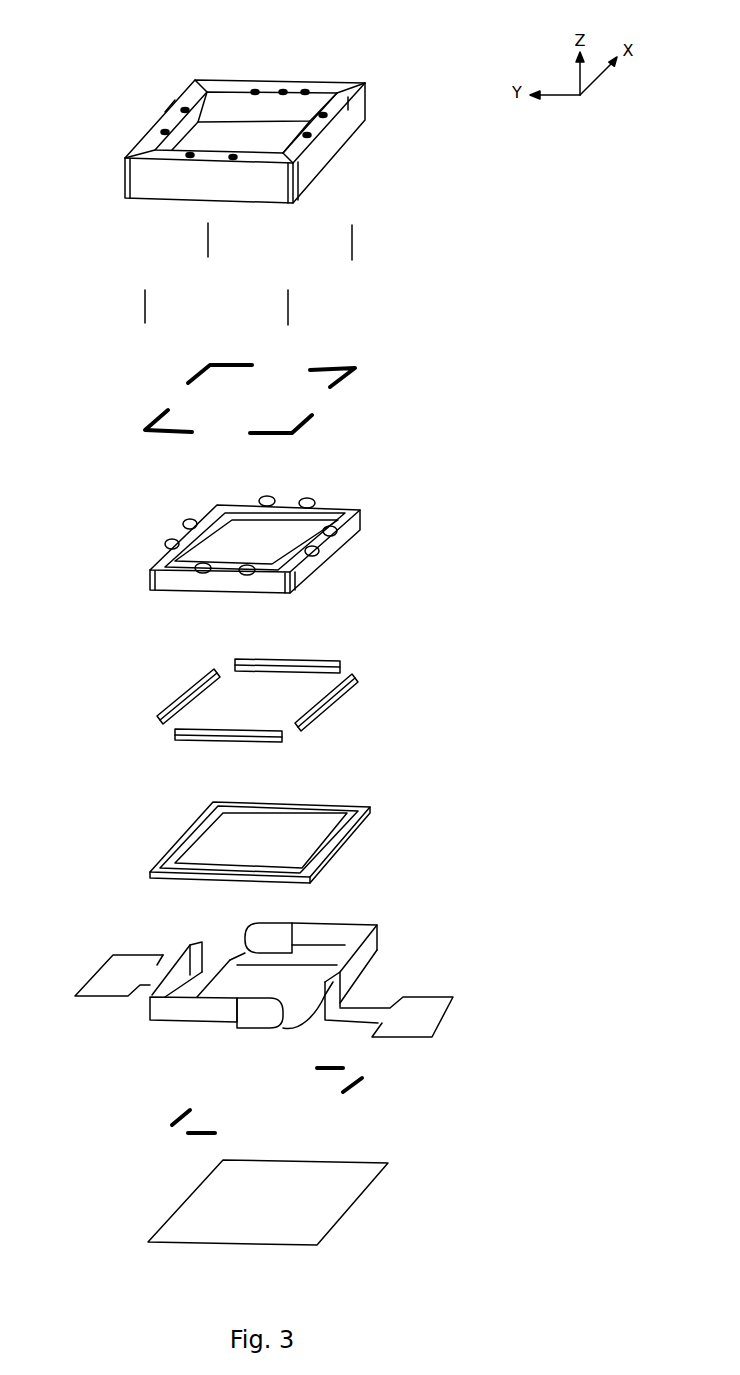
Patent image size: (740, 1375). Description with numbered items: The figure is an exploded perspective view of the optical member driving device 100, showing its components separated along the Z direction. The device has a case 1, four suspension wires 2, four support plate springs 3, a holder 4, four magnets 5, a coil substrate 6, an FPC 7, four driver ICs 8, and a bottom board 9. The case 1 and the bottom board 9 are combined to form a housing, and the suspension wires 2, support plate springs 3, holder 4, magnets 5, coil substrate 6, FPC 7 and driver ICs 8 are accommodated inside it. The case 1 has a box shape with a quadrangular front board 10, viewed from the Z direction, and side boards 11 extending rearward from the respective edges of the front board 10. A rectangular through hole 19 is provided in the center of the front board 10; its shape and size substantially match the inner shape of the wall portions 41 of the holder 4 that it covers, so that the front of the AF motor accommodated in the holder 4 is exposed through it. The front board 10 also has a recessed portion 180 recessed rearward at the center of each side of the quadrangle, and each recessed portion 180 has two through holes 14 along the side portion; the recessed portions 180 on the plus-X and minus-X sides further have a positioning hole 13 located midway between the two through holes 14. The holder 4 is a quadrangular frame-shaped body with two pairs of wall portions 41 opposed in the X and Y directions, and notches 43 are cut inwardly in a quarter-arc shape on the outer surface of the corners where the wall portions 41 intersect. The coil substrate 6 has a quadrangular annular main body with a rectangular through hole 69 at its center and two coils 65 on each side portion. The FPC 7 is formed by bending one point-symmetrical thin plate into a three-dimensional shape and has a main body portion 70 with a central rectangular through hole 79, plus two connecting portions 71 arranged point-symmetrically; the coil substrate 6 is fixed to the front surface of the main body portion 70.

The optical member driving device 100 is at (103, 75).
The case 1 is at (385, 77).
The front board 10 is at (348, 97).
The side boards 11 is at (315, 168).
The positioning hole 13 is at (275, 93).
The through holes 14 is at (253, 90).
The through hole 19 is at (223, 102).
The recessed portion 180 is at (253, 83).
The suspension wires 2 is at (205, 240).
The support plate springs 3 is at (196, 358).
The holder 4 is at (385, 506).
The wall portions 41 is at (342, 510).
The notches 43 is at (217, 505).
The magnets 5 is at (310, 663).
The coil substrate 6 is at (385, 799).
The coils 65 is at (267, 807).
The through hole 69 is at (235, 810).
The FPC 7 is at (400, 934).
The connecting portions 71 is at (297, 922).
The through hole 79 is at (240, 970).
The main body portion 70 is at (310, 1020).
The driver ICs 8 is at (317, 1068).
The bottom board 9 is at (402, 1162).